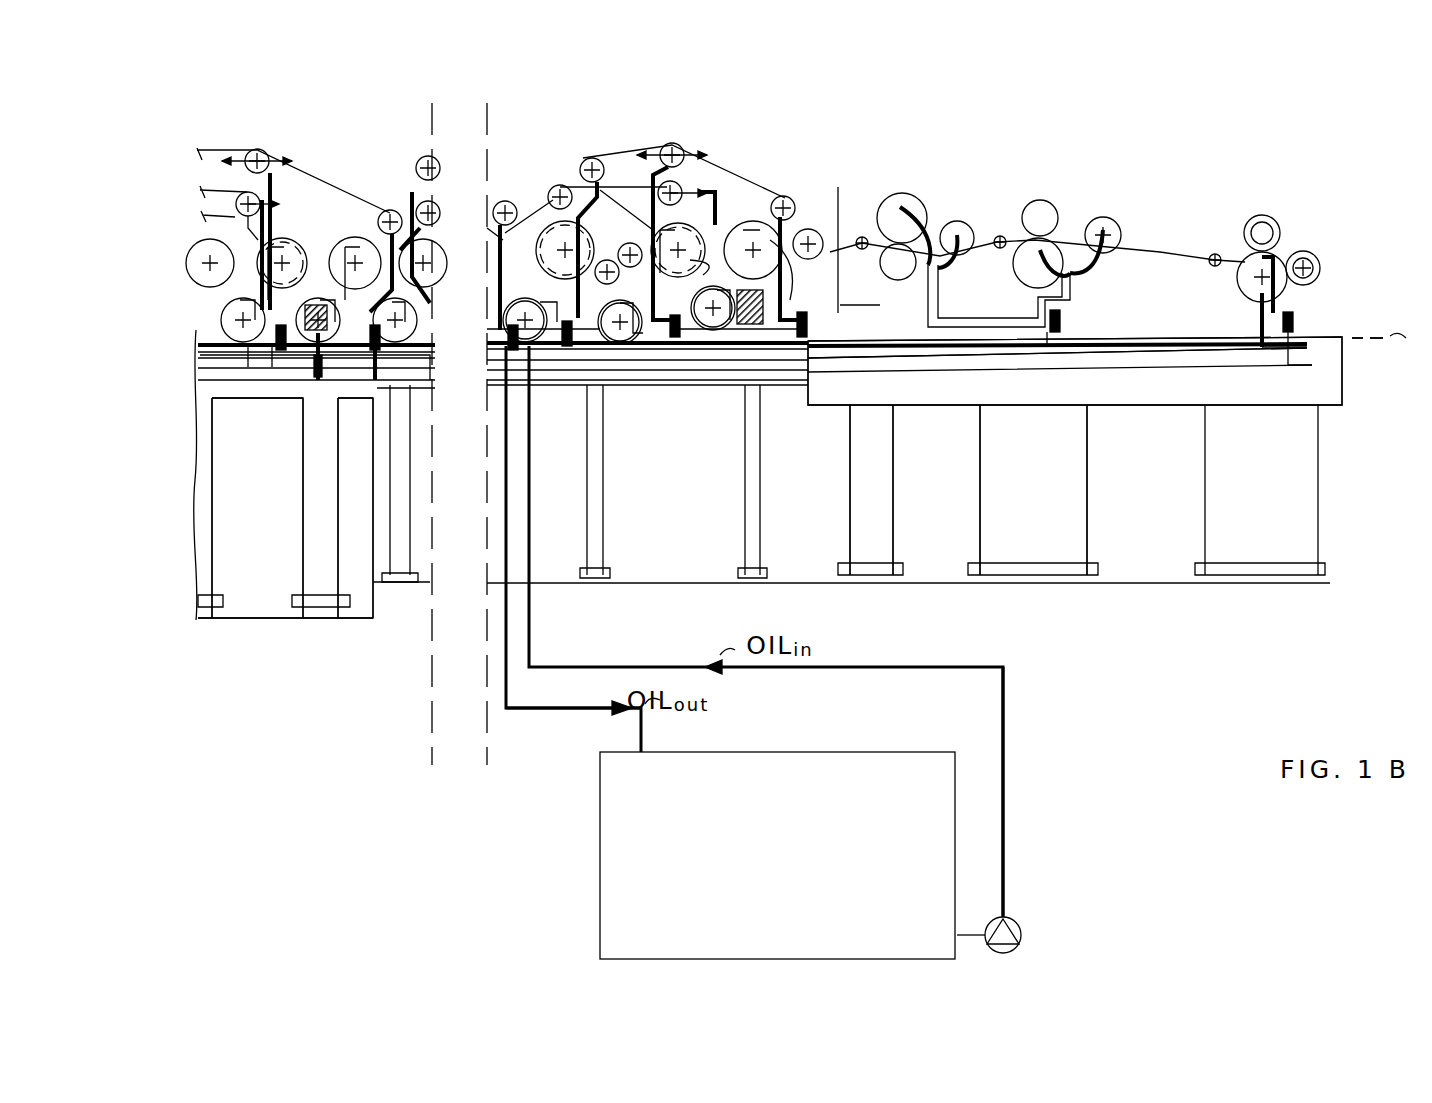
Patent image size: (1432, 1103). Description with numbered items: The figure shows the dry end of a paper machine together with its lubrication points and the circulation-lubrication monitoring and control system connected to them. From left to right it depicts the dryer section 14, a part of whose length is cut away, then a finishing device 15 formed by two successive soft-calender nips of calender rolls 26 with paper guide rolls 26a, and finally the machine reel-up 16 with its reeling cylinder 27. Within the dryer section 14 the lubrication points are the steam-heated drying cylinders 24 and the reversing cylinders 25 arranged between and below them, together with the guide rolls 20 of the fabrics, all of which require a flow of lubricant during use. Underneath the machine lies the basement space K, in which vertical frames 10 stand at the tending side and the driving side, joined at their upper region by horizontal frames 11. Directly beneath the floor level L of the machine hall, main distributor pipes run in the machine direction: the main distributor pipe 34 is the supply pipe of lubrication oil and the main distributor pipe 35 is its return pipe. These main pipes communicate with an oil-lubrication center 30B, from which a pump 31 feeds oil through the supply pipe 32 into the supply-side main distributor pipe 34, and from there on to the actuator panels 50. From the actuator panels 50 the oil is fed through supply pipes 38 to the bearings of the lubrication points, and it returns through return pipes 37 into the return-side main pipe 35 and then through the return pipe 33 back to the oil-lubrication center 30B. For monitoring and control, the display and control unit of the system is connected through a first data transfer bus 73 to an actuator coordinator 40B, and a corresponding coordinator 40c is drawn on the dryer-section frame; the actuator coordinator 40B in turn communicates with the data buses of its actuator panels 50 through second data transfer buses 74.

The vertical frames 10 is at (1073, 493).
The horizontal frames 11 is at (293, 393).
The dryer section 14 is at (331, 188).
The finishing device 15 is at (958, 182).
The machine reel-up 16 is at (1300, 238).
The guide rolls 20 is at (262, 150).
The steam-heated drying cylinders 24 is at (300, 247).
The reversing cylinders 25 is at (235, 332).
The calender rolls 26 is at (897, 213).
The paper guide rolls 26a is at (965, 240).
The reeling cylinder 27 is at (1247, 287).
The oil-lubrication center 30B is at (878, 750).
The pump 31 is at (1010, 925).
The supply pipe 32 is at (1010, 695).
The return pipe 33 is at (538, 712).
The main distributor pipe 34 is at (1193, 370).
The main distributor pipe 35 is at (903, 357).
The return pipes 37 is at (1075, 320).
The supply pipes 38 is at (965, 297).
The actuator coordinator 40B is at (377, 363).
The oil distribution rail 40c is at (790, 360).
The actuator panels 50 is at (395, 343).
The first data transfer bus 73 is at (272, 380).
The second data transfer buses 74 is at (883, 345).
The basement space K is at (267, 600).
The floor level L is at (1389, 337).